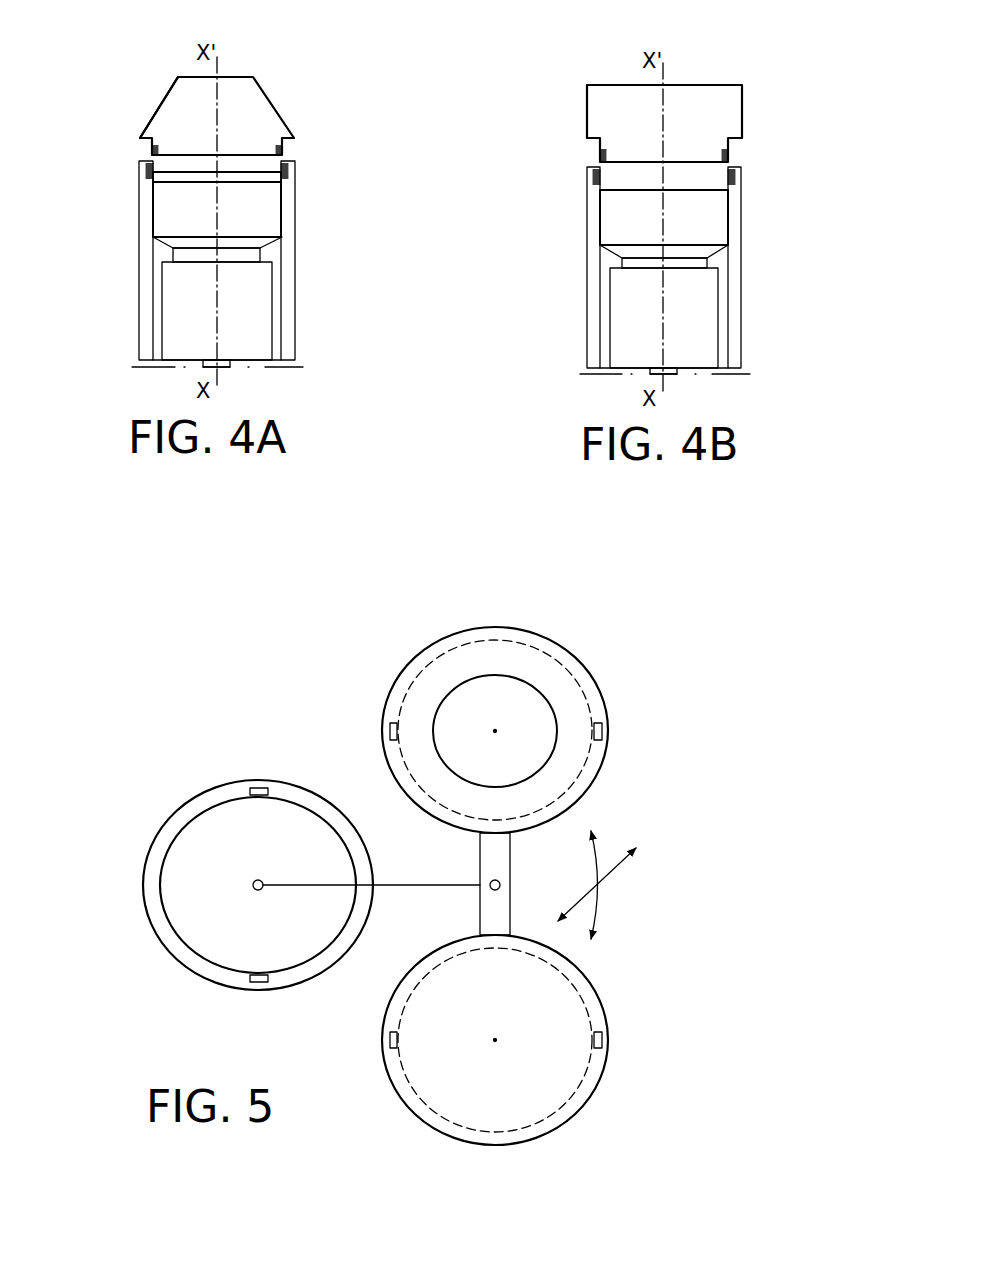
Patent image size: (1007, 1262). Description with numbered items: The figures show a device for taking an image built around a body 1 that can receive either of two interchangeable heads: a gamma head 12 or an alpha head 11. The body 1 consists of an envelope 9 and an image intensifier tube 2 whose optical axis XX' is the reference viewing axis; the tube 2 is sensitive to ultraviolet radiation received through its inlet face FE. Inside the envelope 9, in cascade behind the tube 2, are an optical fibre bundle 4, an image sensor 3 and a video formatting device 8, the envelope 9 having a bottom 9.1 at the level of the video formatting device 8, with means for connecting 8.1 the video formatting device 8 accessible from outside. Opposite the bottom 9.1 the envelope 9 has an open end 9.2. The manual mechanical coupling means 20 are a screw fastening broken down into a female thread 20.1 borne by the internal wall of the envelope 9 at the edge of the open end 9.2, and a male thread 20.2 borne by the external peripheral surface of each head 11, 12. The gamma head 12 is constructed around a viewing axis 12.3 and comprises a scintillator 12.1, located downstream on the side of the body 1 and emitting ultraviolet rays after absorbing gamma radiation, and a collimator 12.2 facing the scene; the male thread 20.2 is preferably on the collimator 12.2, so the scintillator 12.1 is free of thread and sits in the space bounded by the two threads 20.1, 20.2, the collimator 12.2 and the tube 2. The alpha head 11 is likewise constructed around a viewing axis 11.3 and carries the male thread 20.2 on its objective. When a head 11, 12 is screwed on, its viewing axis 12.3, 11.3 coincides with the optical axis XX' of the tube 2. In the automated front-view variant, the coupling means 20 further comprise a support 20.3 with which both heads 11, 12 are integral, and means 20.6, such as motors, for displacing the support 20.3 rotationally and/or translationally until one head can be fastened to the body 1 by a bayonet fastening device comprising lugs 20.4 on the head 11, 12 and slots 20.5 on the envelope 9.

In FIG. 4A, the body 1 is at (137, 258).
In FIG. 4B, the body 1 is at (583, 265).
In FIG. 5, the body 1 is at (165, 810).
In FIG. 4A, the image intensifier tube 2 is at (272, 226).
In FIG. 4B, the image intensifier tube 2 is at (718, 234).
In FIG. 4A, the image sensor 3 is at (252, 256).
In FIG. 4B, the image sensor 3 is at (698, 263).
In FIG. 4A, the optical fibre bundle 4 is at (258, 243).
In FIG. 4B, the optical fibre bundle 4 is at (703, 251).
In FIG. 4A, the video formatting device 8 is at (258, 313).
In FIG. 4B, the video formatting device 8 is at (703, 320).
In FIG. 4A, the means for connecting 8.1 is at (225, 371).
In FIG. 4B, the means for connecting 8.1 is at (672, 378).
In FIG. 4A, the envelope 9 is at (148, 288).
In FIG. 4B, the envelope 9 is at (594, 298).
In FIG. 5, the envelope 9 is at (205, 979).
In FIG. 4A, the bottom 9.1 is at (172, 366).
In FIG. 4B, the bottom 9.1 is at (618, 373).
In FIG. 4A, the open end 9.2 is at (279, 161).
In FIG. 4B, the open end 9.2 is at (726, 168).
In FIG. 4B, the alpha head 11 is at (732, 102).
In FIG. 5, the alpha head 11 is at (605, 1080).
In FIG. 4B, the viewing axis 11.3 is at (665, 77).
In FIG. 4A, the gamma head 12 is at (284, 126).
In FIG. 5, the gamma head 12 is at (603, 753).
In FIG. 4A, the scintillator 12.1 is at (258, 178).
In FIG. 4A, the collimator 12.2 is at (175, 108).
In FIG. 4A, the viewing axis 12.3 is at (218, 122).
In FIG. 4A, the coupling means 20 is at (60, 107).
In FIG. 4B, the coupling means 20 is at (503, 115).
In FIG. 4A, the female thread 20.1 is at (143, 173).
In FIG. 4B, the female thread 20.1 is at (590, 181).
In FIG. 4A, the male thread 20.2 is at (150, 150).
In FIG. 4B, the male thread 20.2 is at (598, 157).
In FIG. 5, the support 20.3 is at (490, 868).
In FIG. 5, the lugs 20.4 is at (602, 731).
In FIG. 5, the slots 20.5 is at (258, 788).
In FIG. 5, the means for displacing the support 20.6 is at (622, 884).
In FIG. 5, the inlet face FE is at (195, 940).